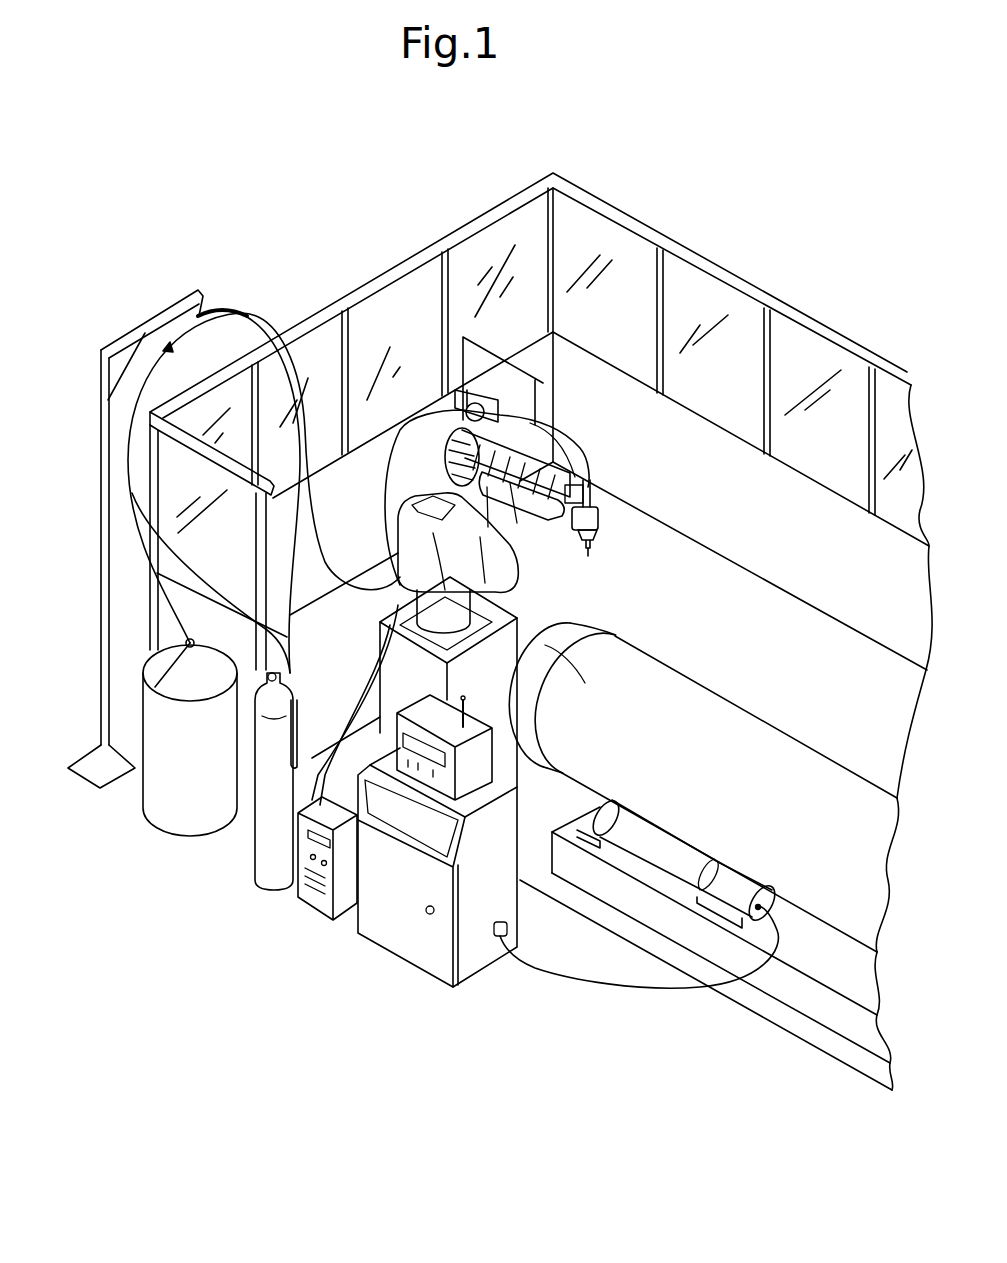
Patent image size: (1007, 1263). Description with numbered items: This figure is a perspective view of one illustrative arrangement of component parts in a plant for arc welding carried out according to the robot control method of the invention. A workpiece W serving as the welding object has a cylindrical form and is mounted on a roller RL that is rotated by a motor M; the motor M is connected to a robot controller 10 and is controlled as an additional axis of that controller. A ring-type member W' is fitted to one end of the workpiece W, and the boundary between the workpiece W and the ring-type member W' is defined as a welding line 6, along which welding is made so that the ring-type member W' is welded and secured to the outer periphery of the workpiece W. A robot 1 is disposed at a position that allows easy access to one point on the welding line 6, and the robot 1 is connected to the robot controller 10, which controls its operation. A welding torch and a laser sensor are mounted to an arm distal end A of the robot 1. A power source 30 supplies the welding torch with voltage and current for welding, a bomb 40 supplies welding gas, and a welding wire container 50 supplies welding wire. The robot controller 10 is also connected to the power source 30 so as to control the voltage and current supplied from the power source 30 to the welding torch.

The robot 1 is at (540, 588).
The welding line 6 is at (595, 686).
The robot controller 10 is at (405, 950).
The power source 30 is at (317, 903).
The bomb 40 is at (265, 880).
The welding wire container 50 is at (178, 822).
The arm distal end A is at (618, 543).
The workpiece W is at (730, 794).
The ring-type member W' is at (603, 690).
The roller RL is at (652, 842).
The motor M is at (742, 892).